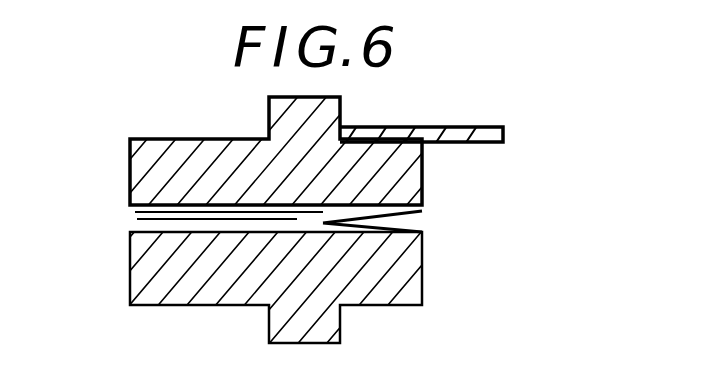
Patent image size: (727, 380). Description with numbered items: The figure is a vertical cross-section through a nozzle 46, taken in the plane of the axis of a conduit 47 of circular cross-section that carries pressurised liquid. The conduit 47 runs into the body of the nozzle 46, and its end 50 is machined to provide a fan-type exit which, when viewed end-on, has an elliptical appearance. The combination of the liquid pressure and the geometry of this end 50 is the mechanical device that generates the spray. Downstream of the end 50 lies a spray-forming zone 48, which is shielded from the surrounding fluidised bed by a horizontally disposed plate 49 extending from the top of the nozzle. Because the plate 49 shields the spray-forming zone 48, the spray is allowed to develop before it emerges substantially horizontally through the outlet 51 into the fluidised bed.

The nozzle 46 is at (505, 88).
The conduit 47 is at (132, 221).
The spray-forming zone 48 is at (470, 187).
The plate 49 is at (503, 133).
The end of the conduit 50 is at (412, 222).
The outlet 51 is at (488, 232).